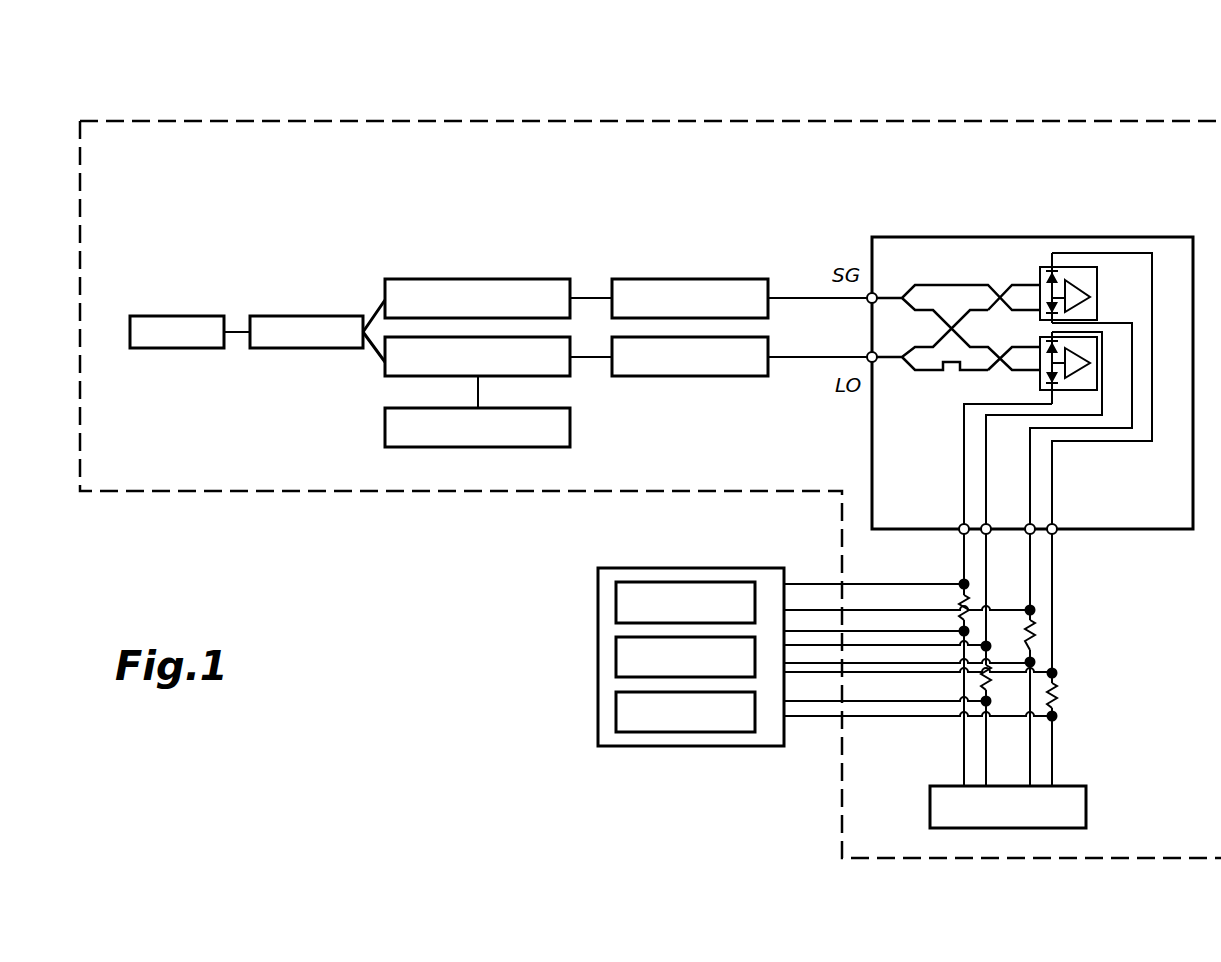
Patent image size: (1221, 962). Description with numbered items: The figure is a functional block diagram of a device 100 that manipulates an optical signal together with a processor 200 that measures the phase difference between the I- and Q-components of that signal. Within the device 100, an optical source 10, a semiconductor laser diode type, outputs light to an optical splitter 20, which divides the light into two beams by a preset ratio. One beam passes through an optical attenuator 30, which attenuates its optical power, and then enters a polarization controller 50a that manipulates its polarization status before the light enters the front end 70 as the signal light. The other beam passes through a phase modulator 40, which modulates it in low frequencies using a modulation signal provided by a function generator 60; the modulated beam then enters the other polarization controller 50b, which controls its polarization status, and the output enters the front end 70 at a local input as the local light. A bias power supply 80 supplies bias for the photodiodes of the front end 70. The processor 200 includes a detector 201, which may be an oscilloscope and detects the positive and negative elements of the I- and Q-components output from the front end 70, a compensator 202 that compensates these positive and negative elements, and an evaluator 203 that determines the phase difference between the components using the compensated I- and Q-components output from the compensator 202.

The device 100 is at (1195, 121).
The optical source 10 is at (145, 316).
The optical splitter 20 is at (262, 316).
The optical attenuator 30 is at (397, 279).
The phase modulator 40 is at (570, 376).
The polarization controller 50a is at (625, 279).
The polarization controller 50b is at (750, 376).
The function generator 60 is at (385, 430).
The front end 70 is at (1100, 226).
The bias power supply 80 is at (1080, 786).
The processor 200 is at (612, 568).
The detector 201 is at (616, 602).
The compensator 202 is at (616, 657).
The evaluator 203 is at (616, 712).